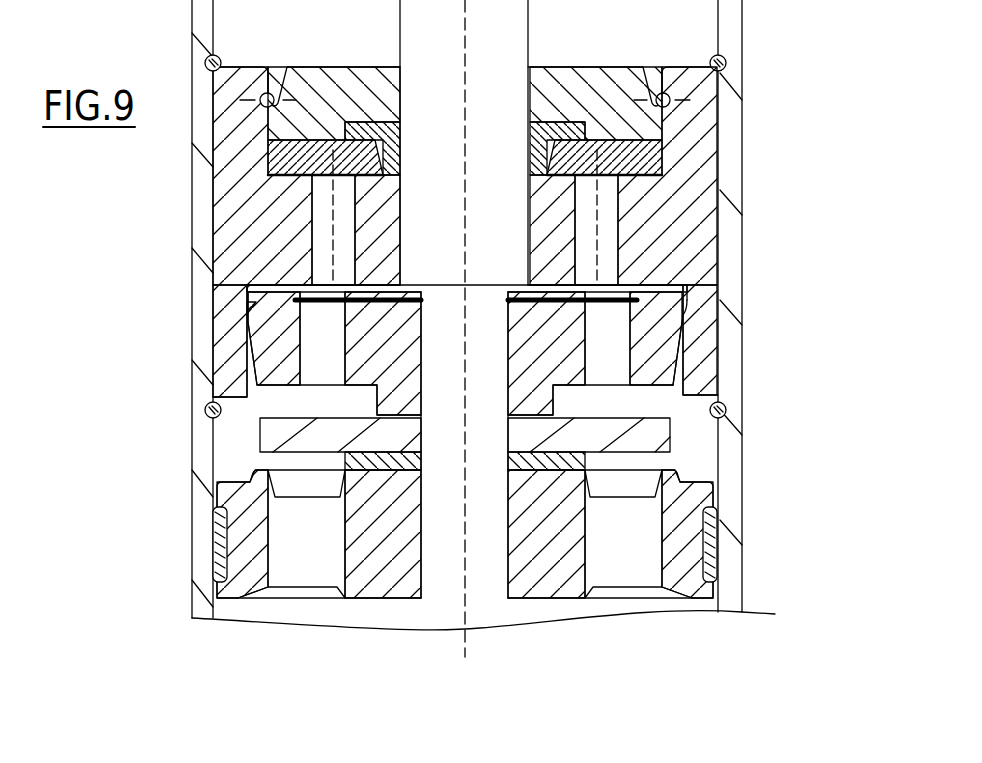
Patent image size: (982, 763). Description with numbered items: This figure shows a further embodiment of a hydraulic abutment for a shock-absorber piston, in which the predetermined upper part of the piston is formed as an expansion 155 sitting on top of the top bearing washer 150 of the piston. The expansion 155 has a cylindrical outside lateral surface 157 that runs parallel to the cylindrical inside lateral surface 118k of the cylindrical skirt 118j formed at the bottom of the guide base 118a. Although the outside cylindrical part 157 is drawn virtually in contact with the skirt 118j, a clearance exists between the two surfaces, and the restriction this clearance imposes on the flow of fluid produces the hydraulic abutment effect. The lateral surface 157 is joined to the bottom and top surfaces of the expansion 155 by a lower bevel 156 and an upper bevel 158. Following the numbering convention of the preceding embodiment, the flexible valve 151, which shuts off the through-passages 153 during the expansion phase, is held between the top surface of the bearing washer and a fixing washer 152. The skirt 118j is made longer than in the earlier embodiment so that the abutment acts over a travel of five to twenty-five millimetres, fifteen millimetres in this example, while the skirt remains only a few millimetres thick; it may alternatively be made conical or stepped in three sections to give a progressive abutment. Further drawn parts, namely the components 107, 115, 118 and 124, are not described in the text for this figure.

The piston hub 107 is at (552, 537).
The piston 115 is at (310, 547).
The cylinder housing 118 is at (668, 197).
The guide base 118a is at (650, 242).
The cylindrical skirt 118j is at (702, 312).
The inside lateral surface 118k is at (245, 380).
The fastening bolt 124 is at (327, 208).
The top bearing washer 150 is at (597, 433).
The flexible valve 151 is at (630, 289).
The fixing washer 152 is at (402, 292).
The through-passages 153 is at (605, 357).
The expansion 155 is at (650, 340).
The bevel 156 is at (252, 372).
The outside lateral surface 157 is at (248, 322).
The bevel 158 is at (252, 302).